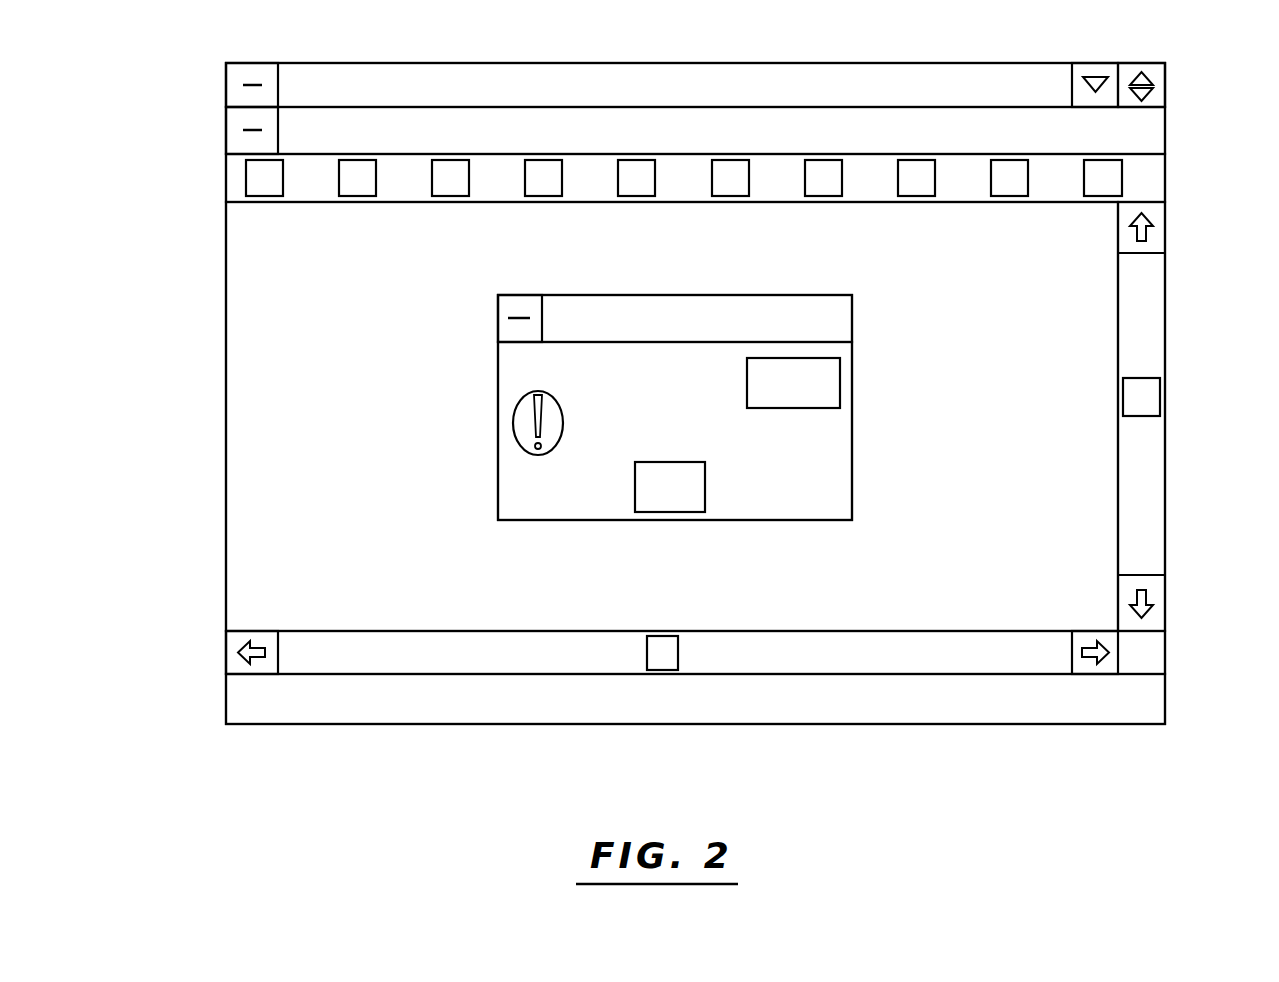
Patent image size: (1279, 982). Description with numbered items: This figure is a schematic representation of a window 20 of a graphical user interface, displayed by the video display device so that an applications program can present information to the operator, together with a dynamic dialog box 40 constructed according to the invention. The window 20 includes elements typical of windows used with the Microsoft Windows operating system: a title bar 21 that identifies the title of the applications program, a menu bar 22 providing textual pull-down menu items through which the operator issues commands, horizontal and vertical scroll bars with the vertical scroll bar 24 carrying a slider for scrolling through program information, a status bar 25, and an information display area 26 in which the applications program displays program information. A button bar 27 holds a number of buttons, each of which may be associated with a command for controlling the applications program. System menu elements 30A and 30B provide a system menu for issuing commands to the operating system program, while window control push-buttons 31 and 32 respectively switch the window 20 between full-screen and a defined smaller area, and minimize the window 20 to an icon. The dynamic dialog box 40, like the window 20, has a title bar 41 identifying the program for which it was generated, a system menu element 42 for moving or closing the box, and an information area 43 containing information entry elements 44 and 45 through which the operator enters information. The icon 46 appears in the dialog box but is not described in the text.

The window 20 is at (284, 769).
The title bar 21 is at (797, 76).
The menu bar 22 is at (1165, 141).
The vertical scroll bar 24 is at (1165, 355).
The status bar 25 is at (1156, 697).
The information display area 26 is at (270, 512).
The button bar 27 is at (1165, 182).
The system menu element 30A is at (226, 92).
The system menu element 30B is at (226, 129).
The window control push-button 31 is at (1183, 58).
The window control push-button 32 is at (1096, 63).
The dynamic dialog box 40 is at (490, 363).
The title bar 41 is at (740, 296).
The system menu element 42 is at (498, 319).
The information area 43 is at (583, 503).
The information entry element 44 is at (698, 512).
The information entry element 45 is at (840, 388).
The message icon 46 is at (513, 432).